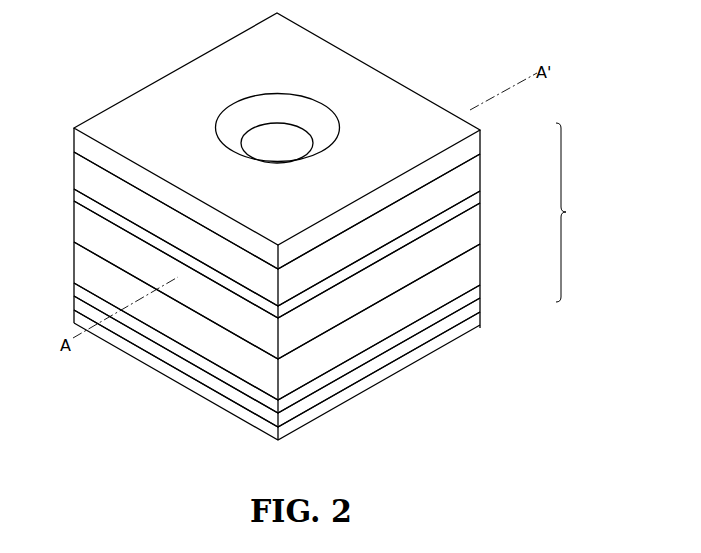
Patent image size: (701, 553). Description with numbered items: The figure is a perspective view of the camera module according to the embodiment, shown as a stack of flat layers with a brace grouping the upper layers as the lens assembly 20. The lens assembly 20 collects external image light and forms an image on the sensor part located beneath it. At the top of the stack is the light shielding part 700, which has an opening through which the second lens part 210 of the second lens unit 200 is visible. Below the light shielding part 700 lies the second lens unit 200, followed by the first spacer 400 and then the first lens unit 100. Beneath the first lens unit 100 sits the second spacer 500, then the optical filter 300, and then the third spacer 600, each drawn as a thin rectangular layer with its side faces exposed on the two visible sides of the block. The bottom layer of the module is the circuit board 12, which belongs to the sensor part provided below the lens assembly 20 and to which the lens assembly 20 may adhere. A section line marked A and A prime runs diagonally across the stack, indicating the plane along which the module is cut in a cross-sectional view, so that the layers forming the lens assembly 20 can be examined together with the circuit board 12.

The light shielding part 700 is at (148, 97).
The second lens part 210 is at (280, 137).
The second lens unit 200 is at (486, 176).
The first spacer 400 is at (485, 198).
The first lens unit 100 is at (485, 214).
The second spacer 500 is at (483, 256).
The optical filter 300 is at (483, 292).
The third spacer 600 is at (483, 302).
The circuit board 12 is at (483, 322).
The lens assembly 20 is at (574, 212).